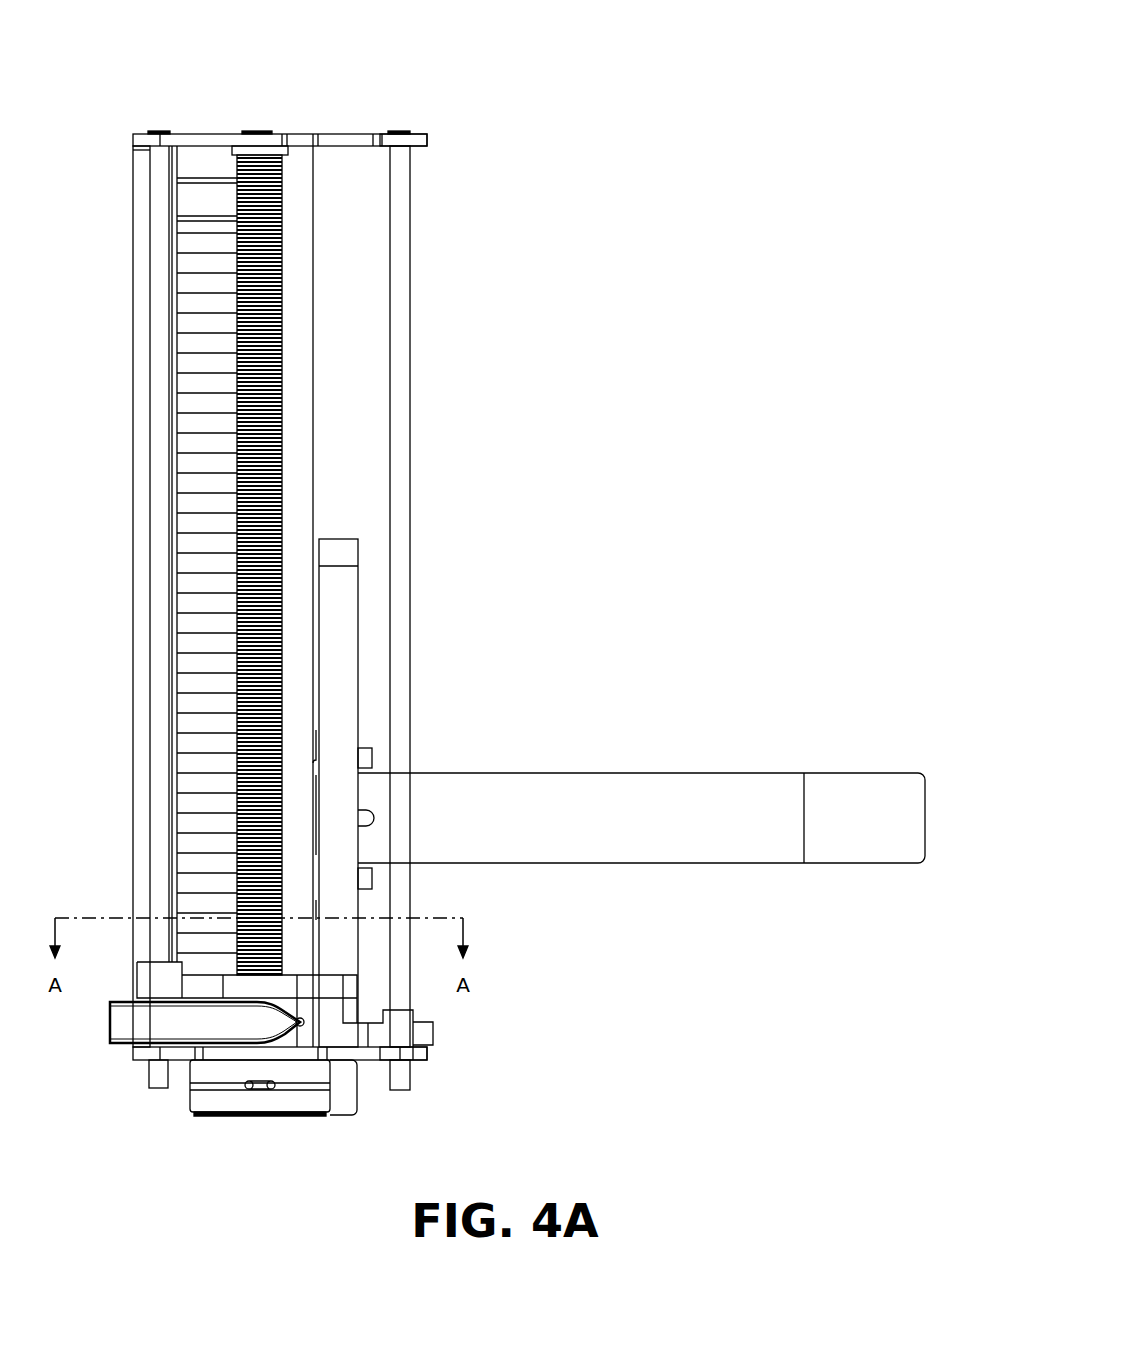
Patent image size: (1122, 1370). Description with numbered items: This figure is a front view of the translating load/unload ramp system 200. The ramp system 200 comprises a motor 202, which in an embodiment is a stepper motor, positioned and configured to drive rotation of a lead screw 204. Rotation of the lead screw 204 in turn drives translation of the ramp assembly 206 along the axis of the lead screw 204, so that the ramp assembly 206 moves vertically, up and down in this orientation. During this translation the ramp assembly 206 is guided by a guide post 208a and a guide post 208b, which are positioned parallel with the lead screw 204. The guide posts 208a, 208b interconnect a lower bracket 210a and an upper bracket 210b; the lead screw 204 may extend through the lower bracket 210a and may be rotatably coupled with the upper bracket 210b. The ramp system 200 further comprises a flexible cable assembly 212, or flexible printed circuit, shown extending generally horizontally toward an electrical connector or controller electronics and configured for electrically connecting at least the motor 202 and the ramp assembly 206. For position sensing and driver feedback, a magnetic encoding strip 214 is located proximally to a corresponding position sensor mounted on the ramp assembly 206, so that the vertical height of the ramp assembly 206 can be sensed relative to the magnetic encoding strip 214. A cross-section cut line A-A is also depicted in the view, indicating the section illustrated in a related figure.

The ramp system 200 is at (118, 50).
The motor 202 is at (290, 1112).
The lead screw 204 is at (280, 168).
The ramp assembly 206 is at (112, 1054).
The guide post 208a is at (405, 437).
The guide post 208b is at (142, 476).
The lower bracket 210a is at (420, 1064).
The upper bracket 210b is at (423, 136).
The flexible cable assembly 212 is at (562, 767).
The magnetic encoding strip 214 is at (195, 305).